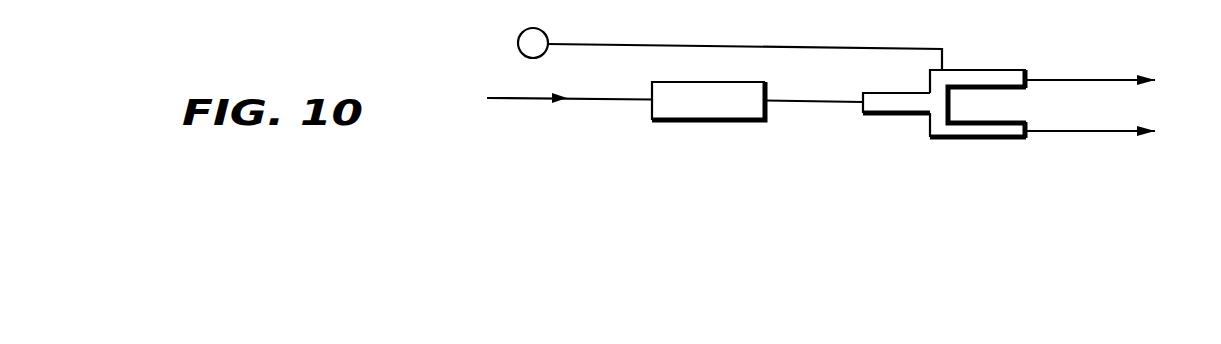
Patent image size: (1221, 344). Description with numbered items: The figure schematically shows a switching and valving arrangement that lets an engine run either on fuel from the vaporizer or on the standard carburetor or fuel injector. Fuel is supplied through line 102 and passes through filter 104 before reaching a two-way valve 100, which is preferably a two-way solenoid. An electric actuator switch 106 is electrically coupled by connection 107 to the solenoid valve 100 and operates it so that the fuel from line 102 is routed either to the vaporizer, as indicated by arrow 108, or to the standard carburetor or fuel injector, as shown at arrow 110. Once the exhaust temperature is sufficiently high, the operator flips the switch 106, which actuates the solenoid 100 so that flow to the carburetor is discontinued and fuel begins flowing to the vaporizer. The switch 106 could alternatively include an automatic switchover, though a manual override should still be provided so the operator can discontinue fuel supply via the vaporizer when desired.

The two-way valve 100 is at (1003, 83).
The line 102 is at (528, 99).
The filter 104 is at (703, 120).
The electric actuator switch 106 is at (520, 51).
The electrical coupling 107 is at (760, 47).
The arrow 108 is at (1060, 131).
The arrow 110 is at (1070, 80).